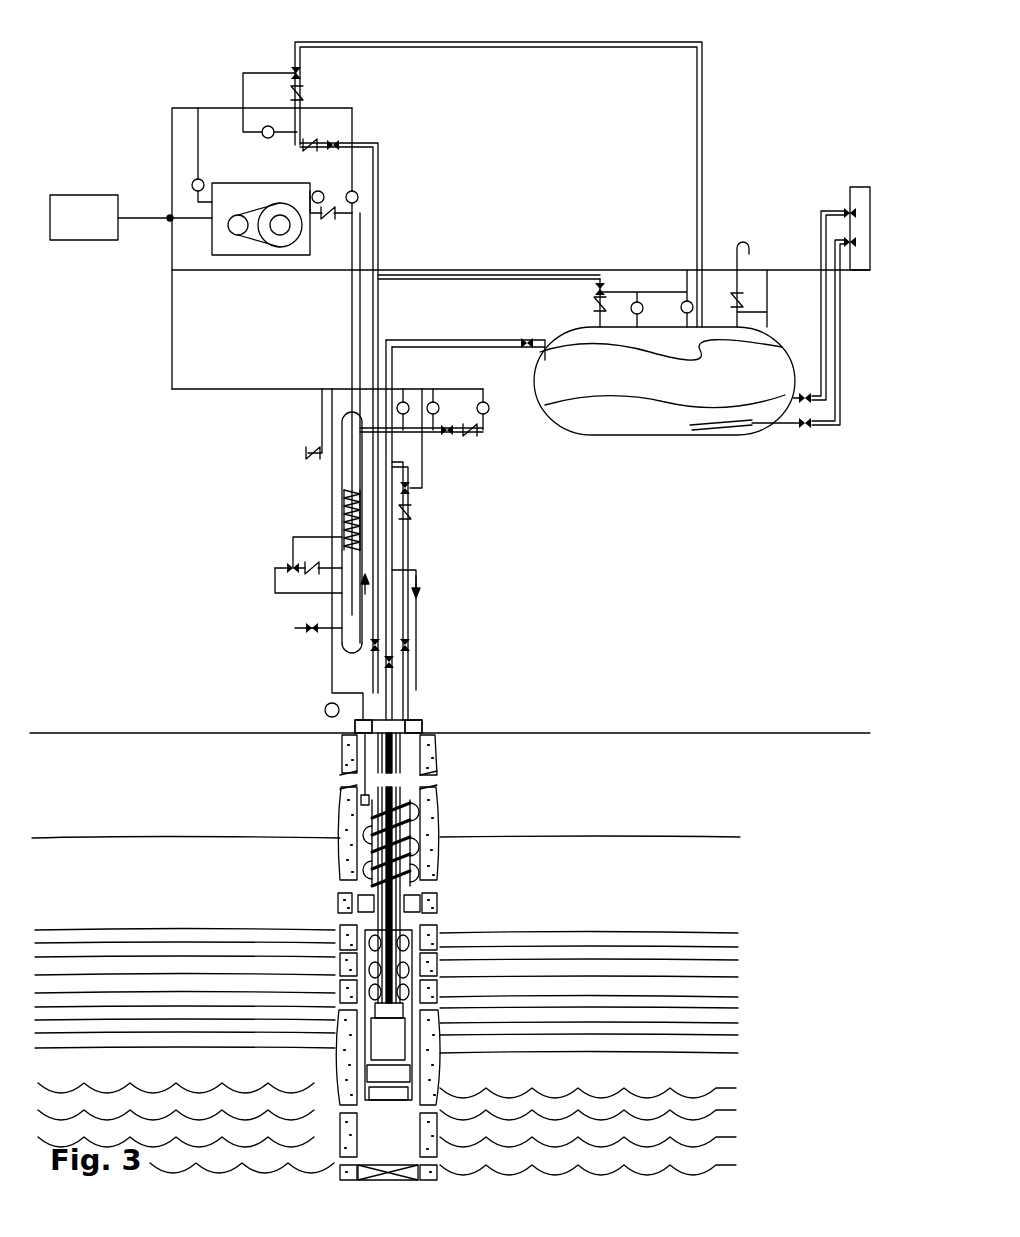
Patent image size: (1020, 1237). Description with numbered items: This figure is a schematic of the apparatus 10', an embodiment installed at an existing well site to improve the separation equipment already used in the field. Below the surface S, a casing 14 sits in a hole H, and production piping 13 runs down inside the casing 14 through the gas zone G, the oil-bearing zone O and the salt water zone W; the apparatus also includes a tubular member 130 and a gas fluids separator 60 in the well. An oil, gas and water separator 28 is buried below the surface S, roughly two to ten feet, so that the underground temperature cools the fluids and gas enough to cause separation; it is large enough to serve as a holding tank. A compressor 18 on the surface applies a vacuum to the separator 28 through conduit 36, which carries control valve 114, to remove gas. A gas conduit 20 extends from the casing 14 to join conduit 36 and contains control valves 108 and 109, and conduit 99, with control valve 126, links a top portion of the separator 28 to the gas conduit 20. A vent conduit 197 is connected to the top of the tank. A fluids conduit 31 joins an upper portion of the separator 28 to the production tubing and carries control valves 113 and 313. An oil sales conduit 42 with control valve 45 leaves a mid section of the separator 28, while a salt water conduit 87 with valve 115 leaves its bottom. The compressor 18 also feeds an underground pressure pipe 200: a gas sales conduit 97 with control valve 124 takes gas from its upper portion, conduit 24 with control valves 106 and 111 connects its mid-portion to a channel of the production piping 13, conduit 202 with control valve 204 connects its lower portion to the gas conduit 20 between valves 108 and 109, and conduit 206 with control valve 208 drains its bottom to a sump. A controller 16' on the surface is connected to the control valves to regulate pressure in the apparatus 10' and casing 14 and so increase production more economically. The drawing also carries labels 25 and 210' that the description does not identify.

The apparatus 10' is at (824, 70).
The production piping 13 is at (438, 790).
The casing 14 is at (345, 855).
The controller 16' is at (84, 217).
The compressor 18 is at (261, 219).
The gas conduit 20 is at (370, 310).
The conduit 24 is at (410, 535).
The bypass line 25 is at (275, 580).
The oil, gas and water separator 28 is at (664, 381).
The fluids conduit 31 is at (416, 572).
The conduit 36 is at (495, 45).
The oil sales conduit 42 is at (822, 330).
The control valve 45 is at (849, 211).
The gas fluids separator 60 is at (438, 850).
The salt water conduit 87 is at (828, 430).
The gas sales conduit 97 is at (487, 434).
The conduit 99 is at (470, 274).
The control valve 106 is at (408, 492).
The control valve 108 is at (335, 142).
The control valve 109 is at (372, 650).
The control valve 111 is at (410, 650).
The control valve 113 is at (394, 667).
The control valve 114 is at (294, 72).
The valve 115 is at (848, 240).
The control valve 124 is at (448, 438).
The control valve 126 is at (600, 284).
The tubular member 130 is at (438, 1003).
The vent conduit 197 is at (740, 240).
The pressure pipe 200 is at (340, 487).
The conduit 202 is at (288, 566).
The control valve 204 is at (310, 566).
The conduit 206 is at (340, 634).
The control valve 208 is at (305, 628).
The tank wall 210' is at (684, 439).
The control valve 313 is at (525, 340).
The surface S is at (72, 730).
The hole H is at (358, 800).
The gas G is at (386, 863).
The oil O is at (386, 991).
The salt water W is at (387, 1129).